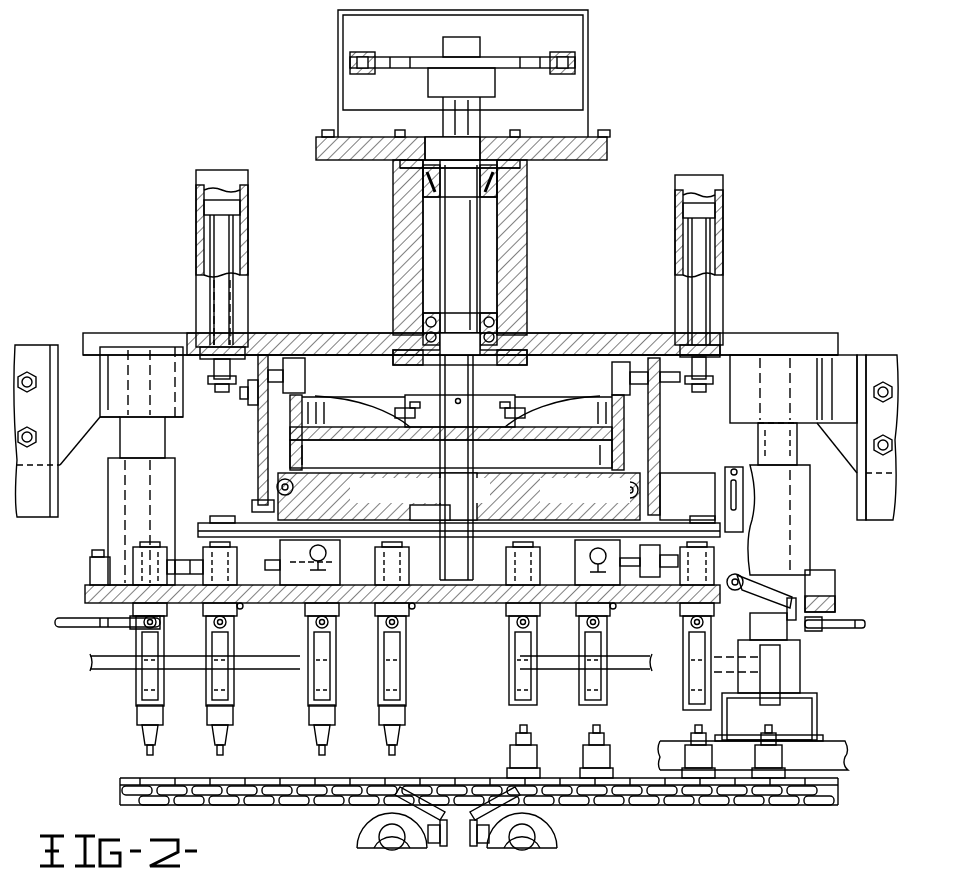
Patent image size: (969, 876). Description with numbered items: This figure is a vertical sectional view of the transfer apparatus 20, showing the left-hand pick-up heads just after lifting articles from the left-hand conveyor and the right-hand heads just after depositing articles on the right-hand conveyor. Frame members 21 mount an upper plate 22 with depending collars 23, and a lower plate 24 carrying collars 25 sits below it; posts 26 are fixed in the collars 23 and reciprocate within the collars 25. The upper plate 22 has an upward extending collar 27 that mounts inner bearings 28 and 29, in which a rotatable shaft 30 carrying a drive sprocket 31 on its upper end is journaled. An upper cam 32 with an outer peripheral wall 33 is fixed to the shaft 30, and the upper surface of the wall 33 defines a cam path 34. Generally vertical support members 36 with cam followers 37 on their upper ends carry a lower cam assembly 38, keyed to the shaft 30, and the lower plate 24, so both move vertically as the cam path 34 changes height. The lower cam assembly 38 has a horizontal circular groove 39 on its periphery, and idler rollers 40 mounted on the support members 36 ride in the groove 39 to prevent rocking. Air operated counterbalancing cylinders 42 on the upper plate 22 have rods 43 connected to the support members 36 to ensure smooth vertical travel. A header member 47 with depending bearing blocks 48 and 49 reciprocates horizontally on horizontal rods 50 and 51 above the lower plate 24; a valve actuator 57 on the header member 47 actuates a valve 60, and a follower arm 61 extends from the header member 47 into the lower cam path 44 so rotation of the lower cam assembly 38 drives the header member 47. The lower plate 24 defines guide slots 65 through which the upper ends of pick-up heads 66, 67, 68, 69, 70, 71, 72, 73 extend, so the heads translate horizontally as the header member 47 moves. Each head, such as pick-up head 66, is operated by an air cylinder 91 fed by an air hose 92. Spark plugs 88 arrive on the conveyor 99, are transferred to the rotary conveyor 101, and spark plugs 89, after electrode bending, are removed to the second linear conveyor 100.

The transfer apparatus 20 is at (808, 333).
The frame members 21 is at (25, 512).
The upper plate 22 is at (647, 335).
The depending collars 23 is at (105, 352).
The lower plate 24 is at (85, 583).
The collars 25 is at (108, 492).
The posts 26 is at (150, 443).
The upward extending collar 27 is at (527, 233).
The inner bearing 28 is at (497, 180).
The inner bearing 29 is at (500, 318).
The rotatable shaft 30 is at (478, 253).
The drive sprocket 31 is at (534, 45).
The upper cam 32 is at (585, 423).
The outer peripheral wall 33 is at (262, 410).
The cam path 34 is at (312, 395).
The support members 36 is at (258, 455).
The cam followers 37 is at (300, 360).
The lower cam assembly 38 is at (459, 496).
The horizontal circular groove 39 is at (295, 488).
The idler rollers 40 is at (290, 488).
The counterbalancing cylinders 42 is at (248, 241).
The rods 43 is at (215, 368).
The lower cam path 44 is at (545, 502).
The header member 47 is at (225, 513).
The bearing block 48 is at (280, 553).
The bearing block 49 is at (648, 565).
The horizontal rod 50 is at (326, 553).
The horizontal rod 51 is at (575, 553).
The valve actuator 57 is at (735, 532).
The valve 60 is at (745, 580).
The follower arm 61 is at (415, 532).
The guide slots 65 is at (241, 610).
The pick-up head 66 is at (137, 680).
The pick-up head 67 is at (208, 683).
The pick-up head 68 is at (310, 684).
The pick-up head 69 is at (380, 684).
The pick-up head 70 is at (510, 687).
The pick-up head 71 is at (583, 687).
The pick-up head 72 is at (685, 689).
The pick-up head 73 is at (765, 710).
The spark plugs 88 is at (160, 714).
The spark plugs 89 is at (540, 767).
The air cylinder 91 is at (157, 624).
The air hose 92 is at (95, 628).
The conveyor 99 is at (293, 772).
The second linear conveyor 100 is at (656, 773).
The rotary conveyor 101 is at (463, 772).